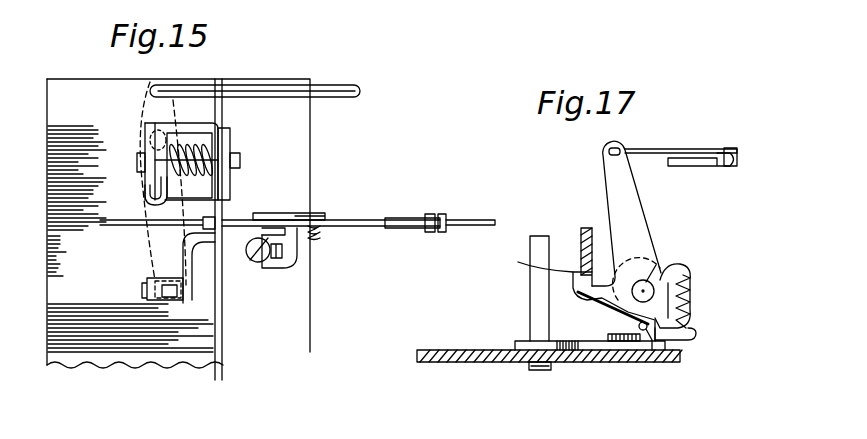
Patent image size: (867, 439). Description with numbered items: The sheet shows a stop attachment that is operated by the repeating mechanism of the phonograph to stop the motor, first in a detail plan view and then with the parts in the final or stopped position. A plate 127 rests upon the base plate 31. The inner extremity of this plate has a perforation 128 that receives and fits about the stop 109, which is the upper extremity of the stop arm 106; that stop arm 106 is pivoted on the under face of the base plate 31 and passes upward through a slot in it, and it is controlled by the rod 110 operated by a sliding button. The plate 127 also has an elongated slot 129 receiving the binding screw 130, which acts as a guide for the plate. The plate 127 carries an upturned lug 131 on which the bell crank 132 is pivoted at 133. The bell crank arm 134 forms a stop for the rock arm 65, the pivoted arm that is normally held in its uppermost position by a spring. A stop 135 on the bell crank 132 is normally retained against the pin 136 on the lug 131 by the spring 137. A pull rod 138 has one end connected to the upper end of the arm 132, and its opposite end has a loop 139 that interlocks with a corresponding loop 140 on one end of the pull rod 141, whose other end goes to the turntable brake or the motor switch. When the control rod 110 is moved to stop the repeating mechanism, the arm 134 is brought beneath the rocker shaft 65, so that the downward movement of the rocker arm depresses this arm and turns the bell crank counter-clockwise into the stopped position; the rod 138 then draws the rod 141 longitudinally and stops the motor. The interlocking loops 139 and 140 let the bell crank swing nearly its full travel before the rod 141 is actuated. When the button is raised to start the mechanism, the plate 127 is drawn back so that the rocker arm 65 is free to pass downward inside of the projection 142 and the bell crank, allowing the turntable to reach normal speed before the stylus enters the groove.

In FIG. 15, the base plate 31 is at (300, 347).
In FIG. 17, the base plate 31 is at (474, 360).
In FIG. 15, the rock arm 65 is at (212, 355).
In FIG. 17, the rock arm 65 is at (590, 227).
In FIG. 17, the stop arm 106 is at (545, 370).
In FIG. 15, the upper extremity of the stop 109 is at (160, 278).
In FIG. 17, the upper extremity of the stop 109 is at (530, 307).
In FIG. 15, the rod 110 is at (340, 91).
In FIG. 15, the plate 127 is at (238, 264).
In FIG. 17, the plate 127 is at (515, 343).
In FIG. 15, the perforation 128 is at (168, 292).
In FIG. 15, the elongated slot 129 is at (284, 256).
In FIG. 15, the binding screw 130 is at (265, 266).
In FIG. 17, the upturned lug 131 is at (656, 264).
In FIG. 17, the bell crank 132 is at (606, 181).
In FIG. 17, the pivot 133 is at (676, 261).
In FIG. 15, the bell crank arm 134 is at (248, 217).
In FIG. 17, the bell crank arm 134 is at (580, 307).
In FIG. 17, the stop 135 is at (672, 341).
In FIG. 17, the pin 136 is at (652, 350).
In FIG. 15, the spring 137 is at (315, 238).
In FIG. 17, the spring 137 is at (693, 290).
In FIG. 15, the pull rod 138 is at (341, 217).
In FIG. 17, the pull rod 138 is at (636, 149).
In FIG. 17, the loop 139 is at (690, 158).
In FIG. 15, the loop 140 is at (410, 228).
In FIG. 17, the loop 140 is at (730, 166).
In FIG. 15, the pull rod 141 is at (462, 219).
In FIG. 15, the projection 142 is at (115, 210).
In FIG. 17, the projection 142 is at (518, 262).